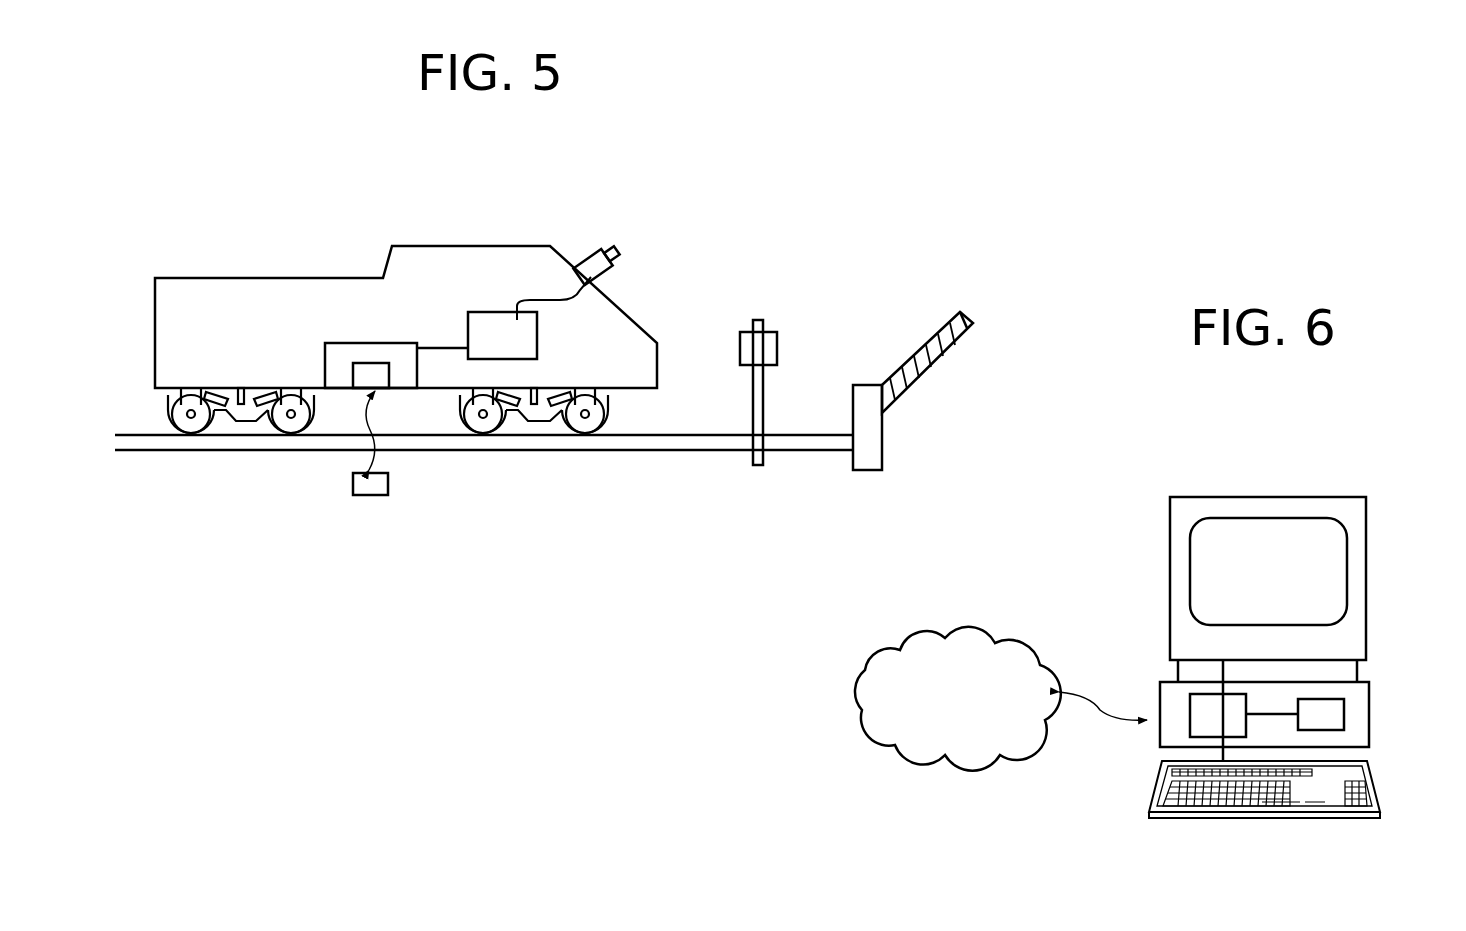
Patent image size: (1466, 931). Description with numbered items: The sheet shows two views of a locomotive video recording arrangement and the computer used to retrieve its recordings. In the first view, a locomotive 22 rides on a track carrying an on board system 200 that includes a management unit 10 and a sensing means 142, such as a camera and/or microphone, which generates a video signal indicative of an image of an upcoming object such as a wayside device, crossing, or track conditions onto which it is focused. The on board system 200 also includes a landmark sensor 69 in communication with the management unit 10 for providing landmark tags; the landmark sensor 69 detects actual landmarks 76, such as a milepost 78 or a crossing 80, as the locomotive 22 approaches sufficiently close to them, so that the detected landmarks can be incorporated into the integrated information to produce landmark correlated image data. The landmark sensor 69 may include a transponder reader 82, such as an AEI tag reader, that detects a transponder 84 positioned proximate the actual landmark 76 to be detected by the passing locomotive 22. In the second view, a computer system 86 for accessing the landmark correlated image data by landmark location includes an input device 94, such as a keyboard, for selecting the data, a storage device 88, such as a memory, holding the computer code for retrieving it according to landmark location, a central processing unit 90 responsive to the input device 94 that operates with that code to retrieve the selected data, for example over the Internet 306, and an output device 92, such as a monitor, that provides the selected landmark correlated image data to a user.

In FIG. 5, the locomotive 22 is at (262, 278).
In FIG. 5, the landmark sensor 69 is at (357, 343).
In FIG. 5, the transponder reader 82 is at (325, 372).
In FIG. 5, the on board system 200 is at (412, 325).
In FIG. 5, the management unit 10 is at (537, 333).
In FIG. 5, the sensing means 142 is at (595, 256).
In FIG. 5, the transponder 84 is at (353, 477).
In FIG. 5, the milepost 78 is at (763, 407).
In FIG. 5, the actual landmark 76 is at (910, 359).
In FIG. 5, the crossing 80 is at (870, 385).
In FIG. 6, the computer system 86 is at (1274, 639).
In FIG. 6, the output device 92 is at (1366, 520).
In FIG. 6, the central processing unit 90 is at (1200, 703).
In FIG. 6, the storage device 88 is at (1344, 708).
In FIG. 6, the input device 94 is at (1228, 818).
In FIG. 6, the Internet 306 is at (948, 630).